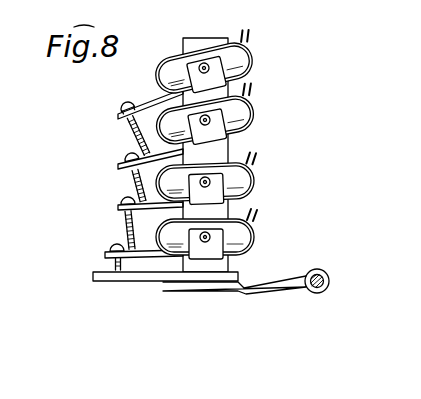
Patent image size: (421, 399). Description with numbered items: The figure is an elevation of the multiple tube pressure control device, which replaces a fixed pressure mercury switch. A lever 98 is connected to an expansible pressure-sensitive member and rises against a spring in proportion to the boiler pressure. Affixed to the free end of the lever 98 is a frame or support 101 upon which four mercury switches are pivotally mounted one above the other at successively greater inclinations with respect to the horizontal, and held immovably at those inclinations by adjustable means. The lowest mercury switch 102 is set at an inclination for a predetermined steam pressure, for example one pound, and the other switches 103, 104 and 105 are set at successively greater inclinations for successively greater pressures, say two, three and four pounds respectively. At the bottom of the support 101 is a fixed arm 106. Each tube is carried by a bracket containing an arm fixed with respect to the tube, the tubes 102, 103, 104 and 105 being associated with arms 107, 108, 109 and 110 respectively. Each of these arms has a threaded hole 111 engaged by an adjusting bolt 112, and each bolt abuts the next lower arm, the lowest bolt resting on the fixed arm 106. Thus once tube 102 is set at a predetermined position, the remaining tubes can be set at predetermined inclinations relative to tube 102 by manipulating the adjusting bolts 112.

The lever 98 is at (250, 290).
The frame or support 101 is at (160, 154).
The mercury switch 102 is at (255, 243).
The mercury switch 103 is at (257, 180).
The mercury switch 104 is at (256, 125).
The mercury switch 105 is at (254, 64).
The fixed arm 106 is at (137, 281).
The arm 107 is at (105, 253).
The arm 108 is at (118, 207).
The arm 109 is at (120, 163).
The arm 110 is at (124, 112).
The threaded hole 111 is at (120, 105).
The adjusting bolt 112 is at (137, 131).